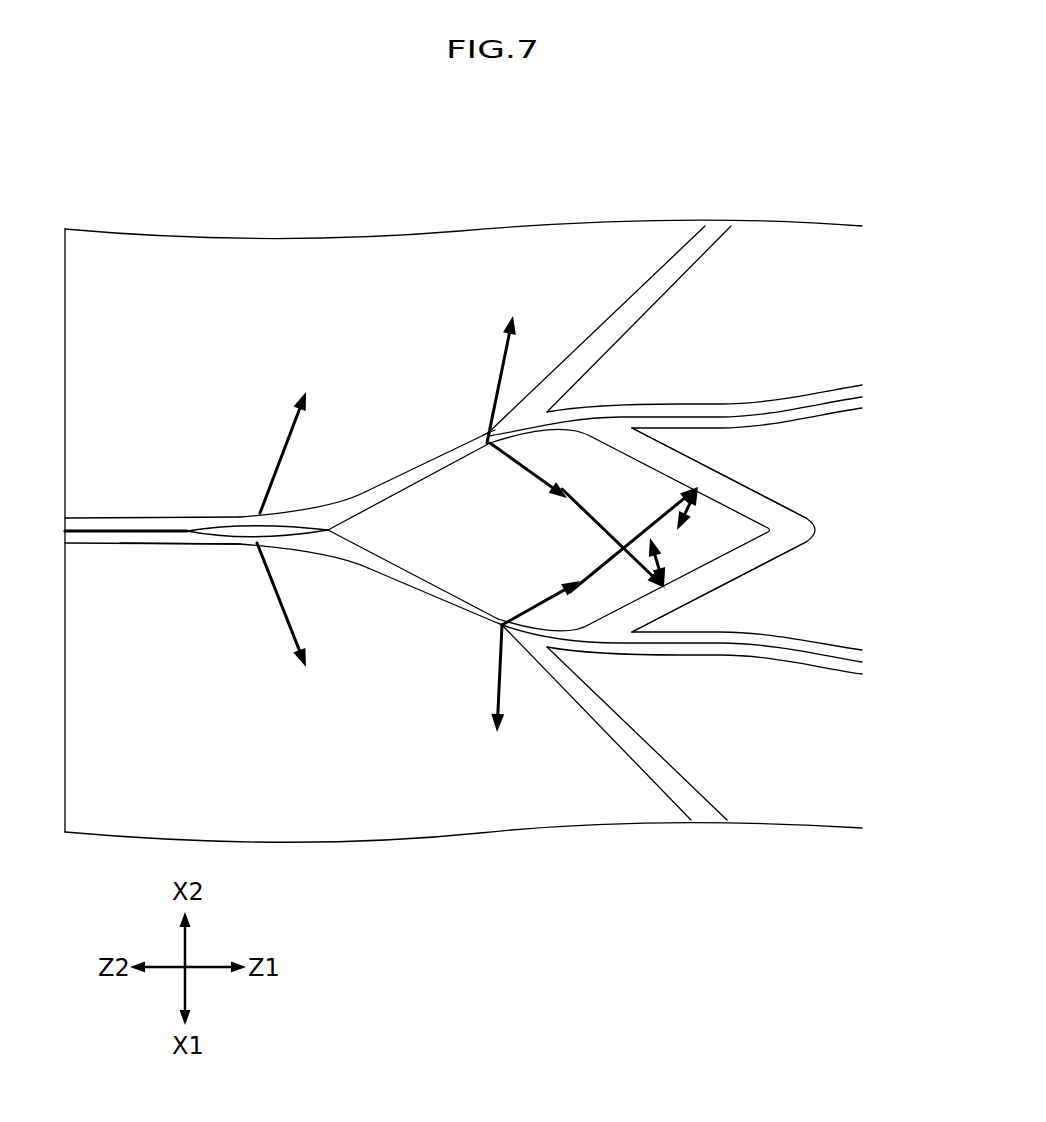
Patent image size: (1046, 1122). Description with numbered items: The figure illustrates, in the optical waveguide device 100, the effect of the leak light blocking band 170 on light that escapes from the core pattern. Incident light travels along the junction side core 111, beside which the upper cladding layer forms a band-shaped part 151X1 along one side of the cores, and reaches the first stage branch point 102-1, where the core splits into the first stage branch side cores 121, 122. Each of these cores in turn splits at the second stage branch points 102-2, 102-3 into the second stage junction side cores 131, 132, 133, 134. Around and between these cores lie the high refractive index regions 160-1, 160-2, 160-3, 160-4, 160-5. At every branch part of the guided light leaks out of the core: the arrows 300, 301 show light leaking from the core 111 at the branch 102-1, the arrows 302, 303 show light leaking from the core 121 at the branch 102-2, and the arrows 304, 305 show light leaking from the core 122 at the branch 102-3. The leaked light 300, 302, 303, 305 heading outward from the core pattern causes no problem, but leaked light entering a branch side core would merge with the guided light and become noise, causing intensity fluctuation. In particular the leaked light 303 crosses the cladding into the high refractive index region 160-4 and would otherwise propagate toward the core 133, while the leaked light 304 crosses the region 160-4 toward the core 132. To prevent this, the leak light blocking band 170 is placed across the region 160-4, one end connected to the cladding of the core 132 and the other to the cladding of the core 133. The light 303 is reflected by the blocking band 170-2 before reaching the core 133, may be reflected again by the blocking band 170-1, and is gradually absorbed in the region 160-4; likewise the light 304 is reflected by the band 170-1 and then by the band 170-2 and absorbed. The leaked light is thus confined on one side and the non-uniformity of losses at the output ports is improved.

The optical waveguide device 100 is at (364, 181).
The junction side core 111 is at (95, 519).
The band-shaped part 151X1 is at (155, 545).
The first stage branch point 102-1 is at (175, 528).
The second stage branch point 102-2 is at (488, 435).
The second stage branch point 102-3 is at (498, 627).
The first stage branch side core 121 is at (413, 470).
The first stage branch side core 122 is at (383, 568).
The second stage junction side core 131 is at (698, 246).
The second stage junction side core 132 is at (820, 400).
The second stage junction side core 133 is at (795, 653).
The second stage junction side core 134 is at (640, 760).
The high refractive index region 160-1 is at (371, 321).
The high refractive index region 160-2 is at (334, 742).
The high refractive index region 160-3 is at (833, 304).
The high refractive index region 160-4 is at (486, 549).
The high refractive index region 160-5 is at (781, 777).
The leak light blocking band 170 is at (790, 498).
The blocking band 170-1 is at (725, 485).
The blocking band 170-2 is at (725, 571).
The leaked light 300 is at (290, 435).
The leaked light 301 is at (278, 610).
The leaked light 302 is at (508, 336).
The leaked light 303 is at (518, 465).
The leaked light 304 is at (540, 605).
The leaked light 305 is at (495, 694).